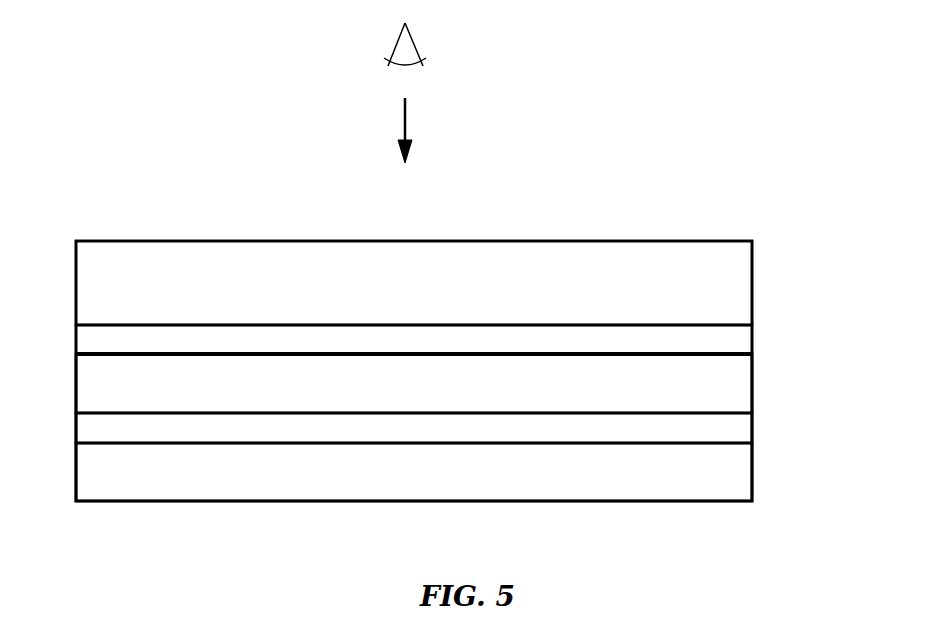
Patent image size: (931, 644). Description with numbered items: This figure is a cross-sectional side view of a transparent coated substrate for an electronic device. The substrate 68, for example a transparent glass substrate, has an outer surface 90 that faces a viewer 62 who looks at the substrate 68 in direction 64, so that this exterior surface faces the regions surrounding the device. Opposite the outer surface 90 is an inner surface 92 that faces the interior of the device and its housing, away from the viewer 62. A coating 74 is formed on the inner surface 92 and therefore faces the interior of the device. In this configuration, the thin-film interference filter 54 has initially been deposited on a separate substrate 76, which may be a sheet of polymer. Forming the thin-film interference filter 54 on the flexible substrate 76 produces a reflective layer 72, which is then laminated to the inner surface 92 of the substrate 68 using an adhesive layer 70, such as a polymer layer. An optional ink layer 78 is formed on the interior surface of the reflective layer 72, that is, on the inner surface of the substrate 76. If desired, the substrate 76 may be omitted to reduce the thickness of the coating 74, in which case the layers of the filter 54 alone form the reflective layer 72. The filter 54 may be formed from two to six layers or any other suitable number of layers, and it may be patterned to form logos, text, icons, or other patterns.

The viewer 62 is at (413, 43).
The direction 64 is at (406, 125).
The outer surface 90 is at (623, 241).
The substrate 68 is at (745, 257).
The inner surface 92 is at (732, 326).
The adhesive layer 70 is at (745, 351).
The reflective layer 72 is at (756, 355).
The ink layer 78 is at (748, 470).
The coating 74 is at (53, 325).
The substrate 76 is at (245, 435).
The thin-film interference filter 54 is at (300, 405).